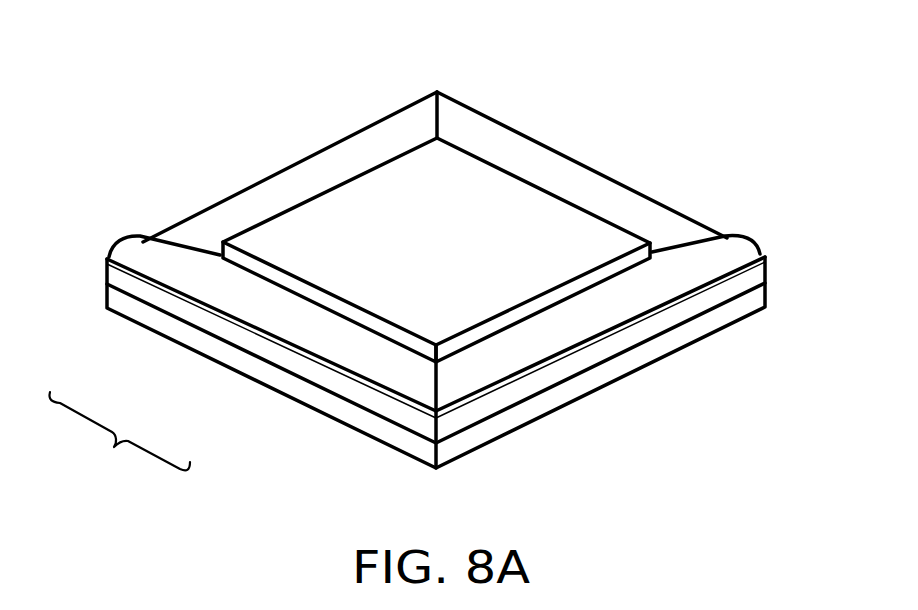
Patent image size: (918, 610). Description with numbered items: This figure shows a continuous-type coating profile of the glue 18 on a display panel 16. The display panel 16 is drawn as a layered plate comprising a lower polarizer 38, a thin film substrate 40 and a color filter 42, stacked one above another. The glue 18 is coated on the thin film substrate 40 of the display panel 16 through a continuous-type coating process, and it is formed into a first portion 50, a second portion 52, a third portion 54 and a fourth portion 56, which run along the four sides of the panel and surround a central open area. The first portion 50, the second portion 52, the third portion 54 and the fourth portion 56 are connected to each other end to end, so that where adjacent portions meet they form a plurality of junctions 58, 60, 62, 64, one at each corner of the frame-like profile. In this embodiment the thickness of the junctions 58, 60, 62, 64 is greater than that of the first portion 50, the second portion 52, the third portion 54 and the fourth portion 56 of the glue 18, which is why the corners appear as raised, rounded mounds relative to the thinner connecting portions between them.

The display panel 16 is at (119, 433).
The glue 18 is at (607, 198).
The lower polarizer 38 is at (353, 267).
The thin film substrate 40 is at (235, 335).
The color filter 42 is at (165, 326).
The first portion 50 is at (282, 162).
The second portion 52 is at (543, 139).
The third portion 54 is at (587, 313).
The fourth portion 56 is at (375, 355).
The junction 58 is at (148, 253).
The junction 60 is at (448, 123).
The junction 62 is at (680, 231).
The junction 64 is at (452, 382).